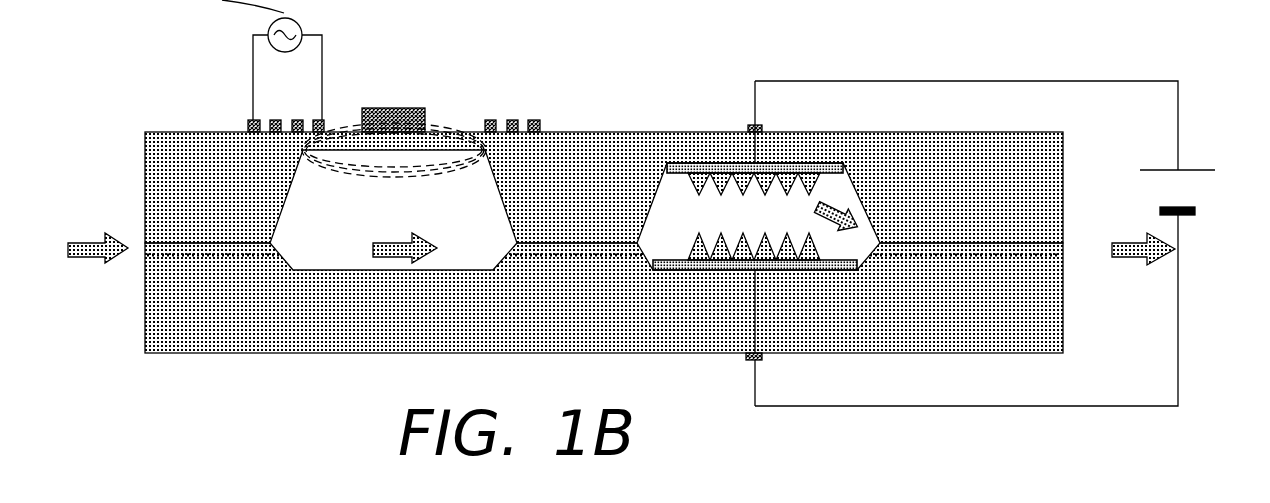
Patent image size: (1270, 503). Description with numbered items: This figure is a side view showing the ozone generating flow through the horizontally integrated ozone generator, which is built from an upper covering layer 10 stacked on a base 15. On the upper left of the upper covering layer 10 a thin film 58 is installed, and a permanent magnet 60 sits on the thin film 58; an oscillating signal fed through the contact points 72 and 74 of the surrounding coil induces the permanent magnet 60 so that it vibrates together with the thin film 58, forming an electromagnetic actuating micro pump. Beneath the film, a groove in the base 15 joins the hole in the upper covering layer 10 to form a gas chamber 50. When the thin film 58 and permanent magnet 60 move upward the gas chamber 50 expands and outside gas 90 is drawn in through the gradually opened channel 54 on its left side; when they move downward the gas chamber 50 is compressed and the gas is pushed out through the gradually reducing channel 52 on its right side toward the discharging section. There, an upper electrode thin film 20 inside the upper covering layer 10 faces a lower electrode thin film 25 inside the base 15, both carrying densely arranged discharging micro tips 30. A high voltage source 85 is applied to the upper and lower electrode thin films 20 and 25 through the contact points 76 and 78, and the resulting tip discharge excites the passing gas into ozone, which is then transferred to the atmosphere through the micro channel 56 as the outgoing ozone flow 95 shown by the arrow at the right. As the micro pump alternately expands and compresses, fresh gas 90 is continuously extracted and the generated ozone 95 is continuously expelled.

The upper covering layer 10 is at (153, 162).
The base 15 is at (167, 327).
The upper electrode thin film 20 is at (690, 170).
The lower electrode thin film 25 is at (728, 270).
The discharging micro tips 30 is at (695, 262).
The gas chamber 50 is at (320, 255).
The gradually reducing channel 52 is at (610, 248).
The gradually opened channel 54 is at (152, 252).
The micro channel 56 is at (1053, 255).
The thin film 58 is at (443, 127).
The permanent magnet 60 is at (413, 113).
The contact point 72 is at (250, 118).
The contact point 74 is at (325, 125).
The contact point 76 is at (748, 127).
The contact point 78 is at (760, 360).
The high voltage source 85 is at (1180, 170).
The gas 90 is at (75, 246).
The output light 95 is at (1125, 251).